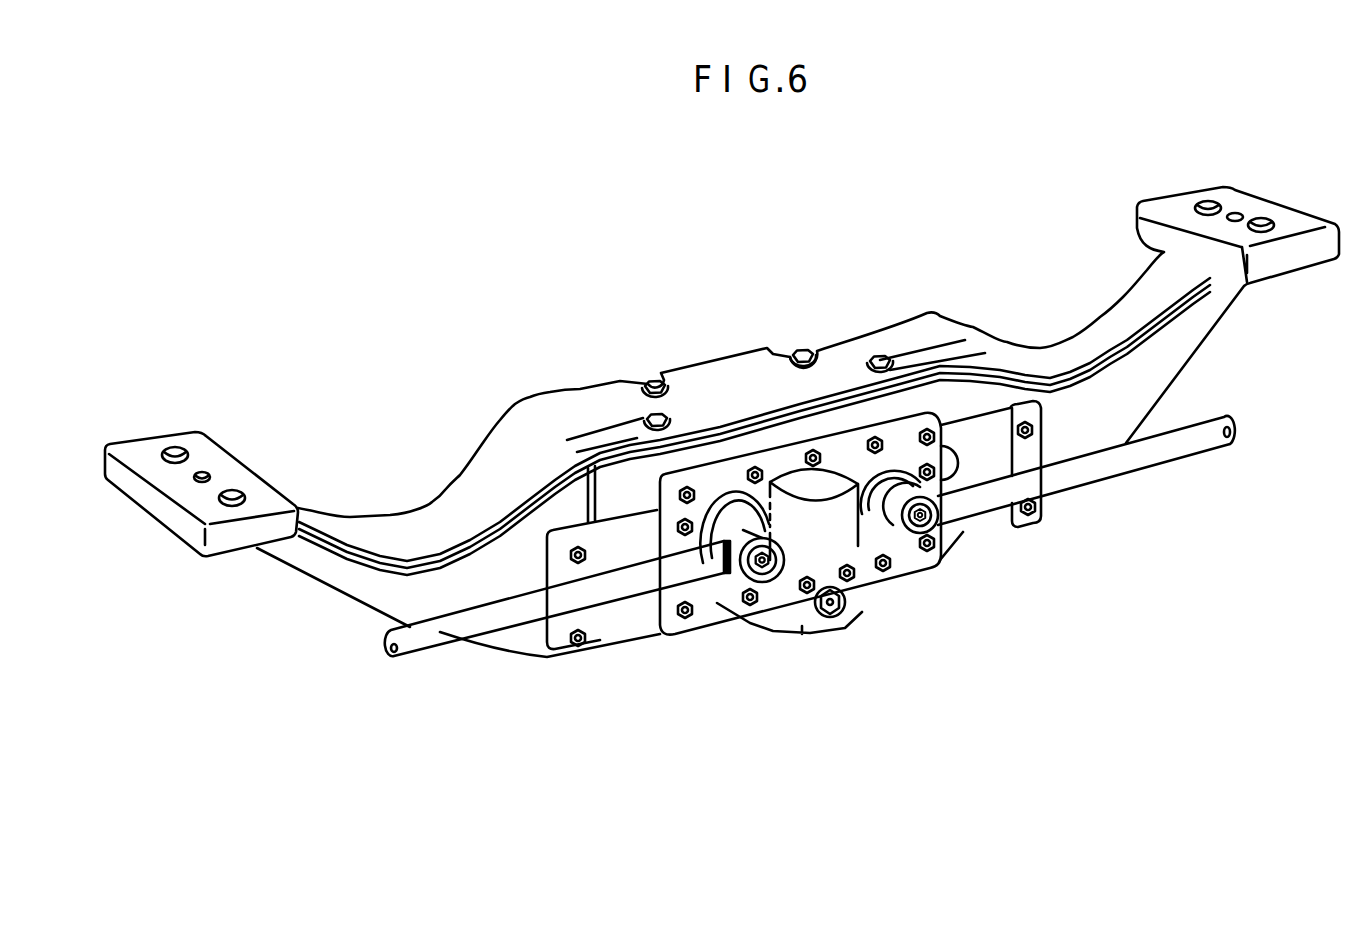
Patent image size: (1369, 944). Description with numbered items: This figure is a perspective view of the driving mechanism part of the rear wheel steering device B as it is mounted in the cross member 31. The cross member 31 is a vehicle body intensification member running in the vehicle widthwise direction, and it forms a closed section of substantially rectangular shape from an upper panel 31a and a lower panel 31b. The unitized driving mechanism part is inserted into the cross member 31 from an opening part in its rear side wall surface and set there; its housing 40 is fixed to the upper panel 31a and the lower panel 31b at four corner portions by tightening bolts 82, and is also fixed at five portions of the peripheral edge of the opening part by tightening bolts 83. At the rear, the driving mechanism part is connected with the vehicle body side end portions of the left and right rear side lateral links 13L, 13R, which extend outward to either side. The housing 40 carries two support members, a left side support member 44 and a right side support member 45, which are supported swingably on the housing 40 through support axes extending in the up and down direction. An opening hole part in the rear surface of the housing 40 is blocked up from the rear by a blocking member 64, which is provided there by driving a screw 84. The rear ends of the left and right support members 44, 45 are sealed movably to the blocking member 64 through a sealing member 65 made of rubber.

The cross member 31 is at (722, 465).
The upper panel 31a is at (704, 370).
The lower panel 31b is at (512, 652).
The tightening bolts 82 is at (647, 417).
The screw 84 is at (810, 452).
The tightening bolts 83 is at (571, 556).
The housing 40 is at (620, 630).
The blocking member 64 is at (910, 563).
The sealing member 65 is at (716, 588).
The left side support member 44 is at (758, 582).
The right side support member 45 is at (939, 515).
The left rear side lateral link 13L is at (458, 636).
The right rear side lateral link 13R is at (1167, 453).
The rear wheel steering device B is at (985, 624).